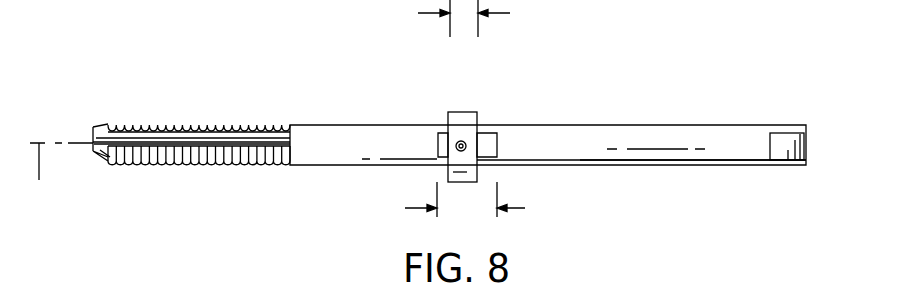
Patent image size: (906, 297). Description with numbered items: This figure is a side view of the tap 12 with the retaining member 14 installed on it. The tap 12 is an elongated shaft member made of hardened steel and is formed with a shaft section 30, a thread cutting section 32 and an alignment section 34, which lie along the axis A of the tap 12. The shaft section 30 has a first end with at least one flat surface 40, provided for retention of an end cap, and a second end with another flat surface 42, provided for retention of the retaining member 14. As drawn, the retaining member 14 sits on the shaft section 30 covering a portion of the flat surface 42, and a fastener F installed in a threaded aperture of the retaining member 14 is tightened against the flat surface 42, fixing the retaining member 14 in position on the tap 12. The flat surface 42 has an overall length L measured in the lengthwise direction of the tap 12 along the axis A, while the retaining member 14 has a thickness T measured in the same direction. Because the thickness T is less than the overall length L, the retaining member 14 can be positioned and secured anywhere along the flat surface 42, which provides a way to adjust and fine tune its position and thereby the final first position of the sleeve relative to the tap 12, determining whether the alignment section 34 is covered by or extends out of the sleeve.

The tap 12 is at (640, 126).
The retaining member 14 is at (457, 111).
The shaft section 30 is at (731, 145).
The thread cutting section 32 is at (237, 125).
The alignment section 34 is at (97, 128).
The flat surface 40 is at (785, 142).
The flat surface 42 is at (487, 143).
The fastener F is at (456, 146).
The axis A is at (61, 176).
The thickness T is at (464, 18).
The overall length L is at (465, 202).